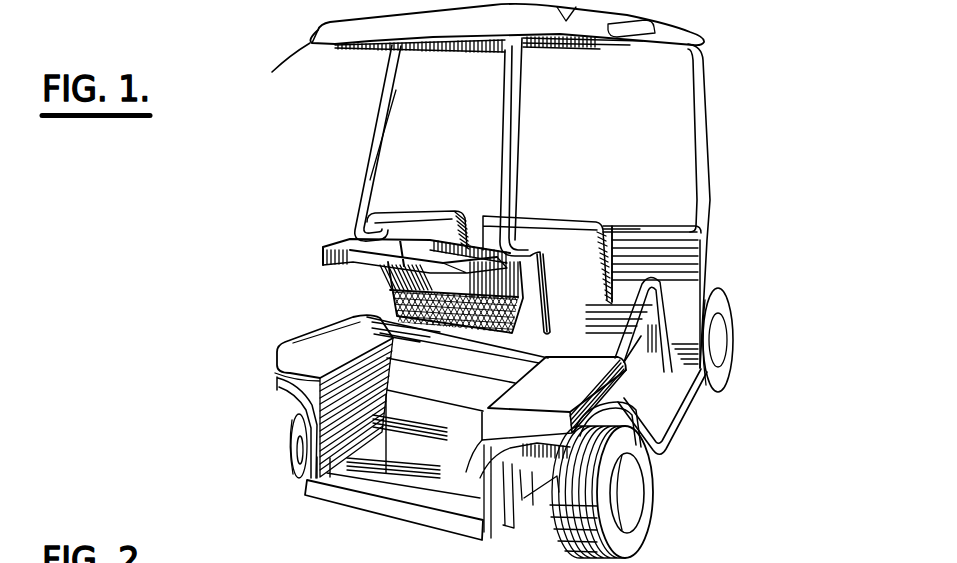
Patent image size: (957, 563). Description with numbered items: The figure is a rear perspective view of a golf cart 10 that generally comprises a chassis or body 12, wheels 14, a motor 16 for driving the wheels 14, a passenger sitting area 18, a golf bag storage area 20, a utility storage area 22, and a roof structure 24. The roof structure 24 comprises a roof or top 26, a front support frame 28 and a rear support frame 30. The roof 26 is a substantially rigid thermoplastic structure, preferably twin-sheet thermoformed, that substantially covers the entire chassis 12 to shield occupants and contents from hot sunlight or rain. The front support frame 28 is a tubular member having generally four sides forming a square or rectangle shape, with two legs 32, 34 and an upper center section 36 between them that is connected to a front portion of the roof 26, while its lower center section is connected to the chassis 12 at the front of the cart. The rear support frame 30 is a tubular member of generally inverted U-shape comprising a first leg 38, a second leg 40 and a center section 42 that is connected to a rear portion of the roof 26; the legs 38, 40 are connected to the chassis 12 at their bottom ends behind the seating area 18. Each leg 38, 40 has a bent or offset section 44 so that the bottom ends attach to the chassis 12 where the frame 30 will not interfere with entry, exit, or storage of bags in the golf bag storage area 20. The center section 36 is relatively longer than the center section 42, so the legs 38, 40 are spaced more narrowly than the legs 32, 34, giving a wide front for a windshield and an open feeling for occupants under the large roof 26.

The golf cart 10 is at (248, 225).
The chassis or body 12 is at (680, 425).
The wheels 14 is at (727, 302).
The motor 16 is at (707, 395).
The passenger sitting area 18 is at (672, 202).
The golf bag storage area 20 is at (402, 472).
The utility storage area 22 is at (377, 285).
The roof structure 24 is at (722, 35).
The roof or top 26 is at (277, 64).
The front support frame 28 is at (700, 100).
The rear support frame 30 is at (373, 124).
The leg 32 is at (712, 212).
The leg 34 is at (500, 86).
The upper center section 36 is at (588, 50).
The first leg 38 is at (522, 136).
The second leg 40 is at (369, 168).
The center section 42 is at (444, 49).
The bent or offset section 44 is at (548, 232).